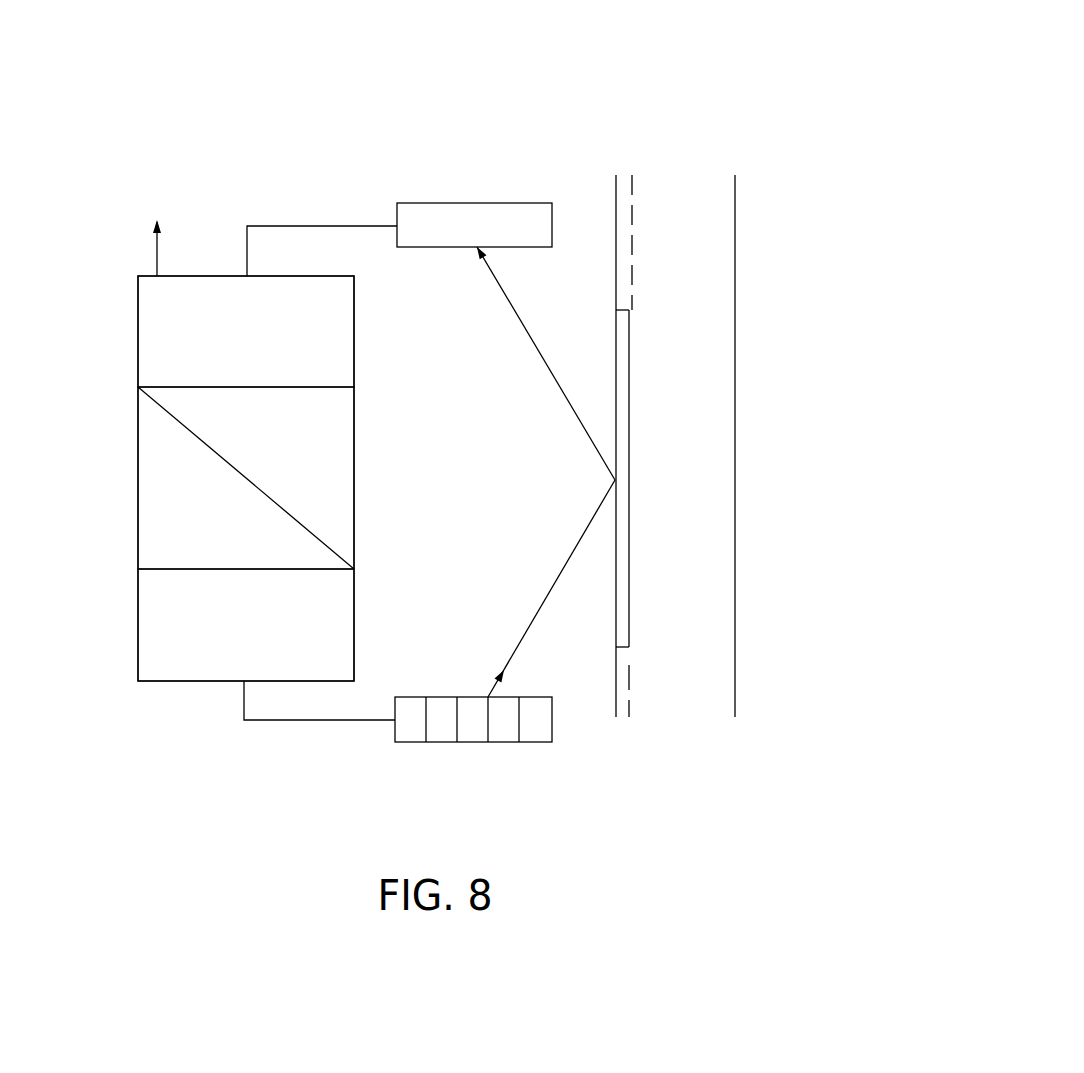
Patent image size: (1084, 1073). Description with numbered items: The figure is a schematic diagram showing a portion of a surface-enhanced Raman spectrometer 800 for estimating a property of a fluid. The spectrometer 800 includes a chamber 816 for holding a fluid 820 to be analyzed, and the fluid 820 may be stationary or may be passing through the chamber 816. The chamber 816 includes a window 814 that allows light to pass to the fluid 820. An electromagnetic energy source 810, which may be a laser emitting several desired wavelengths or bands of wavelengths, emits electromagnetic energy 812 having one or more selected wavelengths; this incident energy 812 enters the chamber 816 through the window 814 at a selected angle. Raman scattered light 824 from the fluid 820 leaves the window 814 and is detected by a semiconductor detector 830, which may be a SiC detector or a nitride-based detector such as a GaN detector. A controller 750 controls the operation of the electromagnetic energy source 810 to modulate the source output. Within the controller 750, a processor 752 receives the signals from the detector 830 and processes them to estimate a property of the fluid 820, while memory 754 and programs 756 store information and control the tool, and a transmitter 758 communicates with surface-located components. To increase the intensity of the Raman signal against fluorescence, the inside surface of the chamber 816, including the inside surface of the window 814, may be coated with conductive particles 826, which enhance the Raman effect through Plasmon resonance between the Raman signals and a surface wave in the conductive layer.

The surface-enhanced Raman spectrometer 800 is at (615, 55).
The controller 750 is at (181, 683).
The processor 752 is at (138, 628).
The memory 754 is at (138, 465).
The programs 756 is at (224, 481).
The transmitter 758 is at (138, 311).
The electromagnetic energy source 810 is at (442, 742).
The electromagnetic energy 812 is at (548, 582).
The window 814 is at (615, 578).
The chamber 816 is at (735, 275).
The fluid 820 is at (661, 213).
The Raman scattered light 824 is at (545, 366).
The conductive particles 826 is at (629, 683).
The semiconductor detector 830 is at (472, 203).